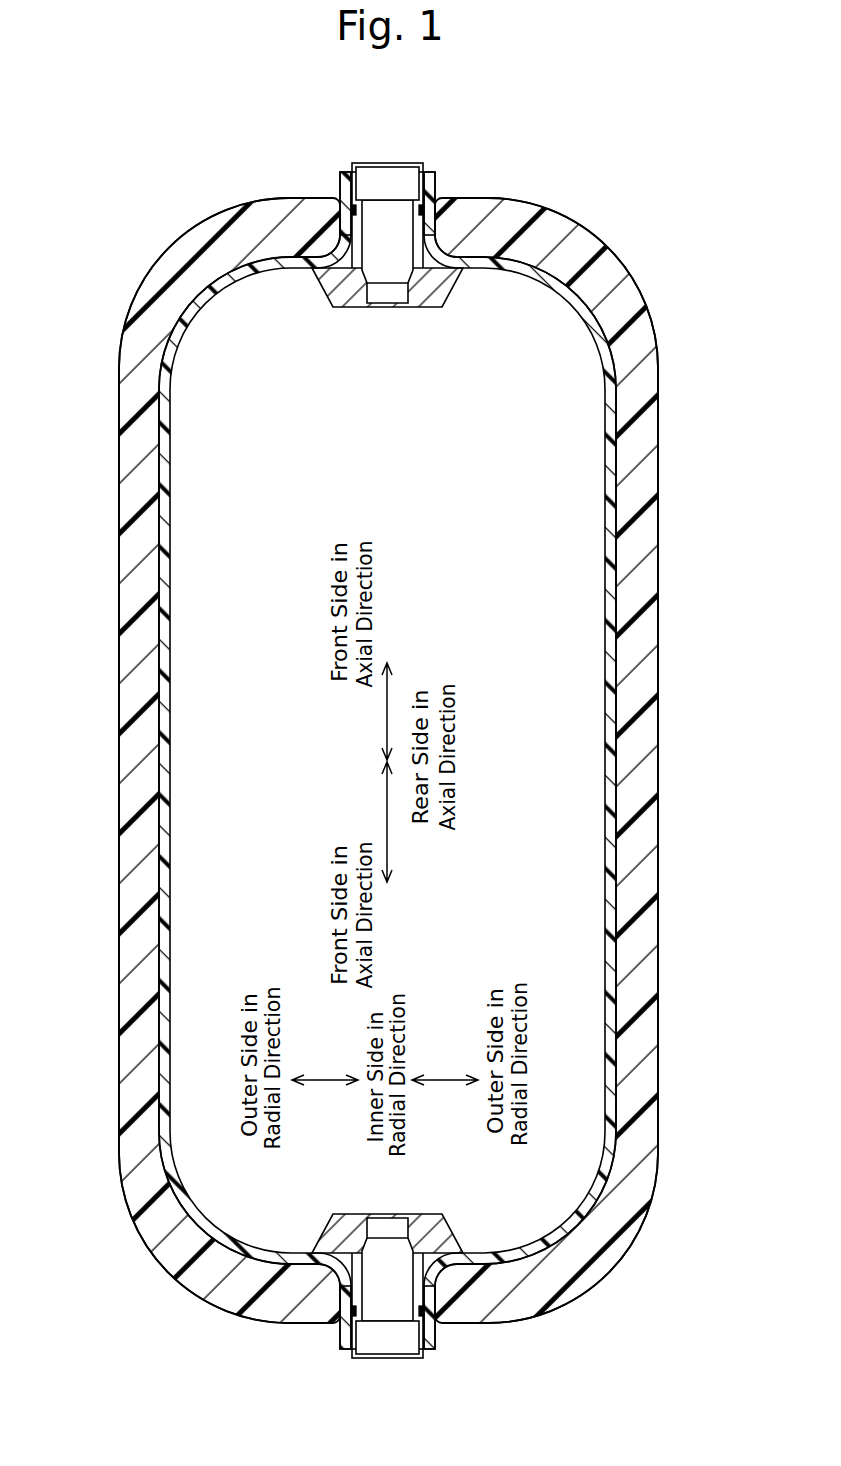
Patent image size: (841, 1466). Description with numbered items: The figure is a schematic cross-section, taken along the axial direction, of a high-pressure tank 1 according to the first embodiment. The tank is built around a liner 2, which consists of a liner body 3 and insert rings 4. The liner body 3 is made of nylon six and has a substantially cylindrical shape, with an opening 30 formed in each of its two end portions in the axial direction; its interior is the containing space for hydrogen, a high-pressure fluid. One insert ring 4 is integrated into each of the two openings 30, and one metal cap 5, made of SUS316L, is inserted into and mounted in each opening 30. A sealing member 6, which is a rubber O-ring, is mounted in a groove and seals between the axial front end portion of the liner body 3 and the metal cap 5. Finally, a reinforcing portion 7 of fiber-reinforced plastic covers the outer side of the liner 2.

The high-pressure tank 1 is at (676, 264).
The liner 2 is at (202, 130).
The liner body 3 is at (343, 190).
The insert ring 4 is at (243, 263).
The metal cap 5 is at (337, 282).
The sealing member 6 is at (460, 208).
The reinforcing portion 7 is at (133, 326).
The opening 30 is at (476, 303).